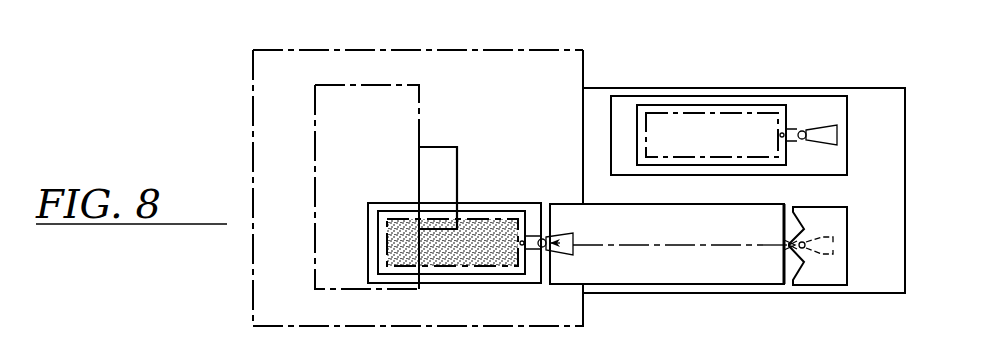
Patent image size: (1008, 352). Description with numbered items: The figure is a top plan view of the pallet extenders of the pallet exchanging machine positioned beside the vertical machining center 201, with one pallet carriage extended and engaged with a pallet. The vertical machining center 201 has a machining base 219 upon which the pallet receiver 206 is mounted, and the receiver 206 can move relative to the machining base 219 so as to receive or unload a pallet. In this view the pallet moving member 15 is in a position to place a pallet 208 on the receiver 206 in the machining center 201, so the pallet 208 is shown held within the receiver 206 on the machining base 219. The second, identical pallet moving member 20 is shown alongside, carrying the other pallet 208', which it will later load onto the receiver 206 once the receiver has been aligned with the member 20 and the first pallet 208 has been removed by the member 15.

The vertical machining center 201 is at (385, 30).
The machining base 219 is at (478, 203).
The pallet receiver 206 is at (495, 210).
The pallet 208 is at (519, 279).
The pallet 208' is at (729, 97).
The pallet moving member 20 is at (740, 103).
The pallet moving member 15 is at (708, 264).